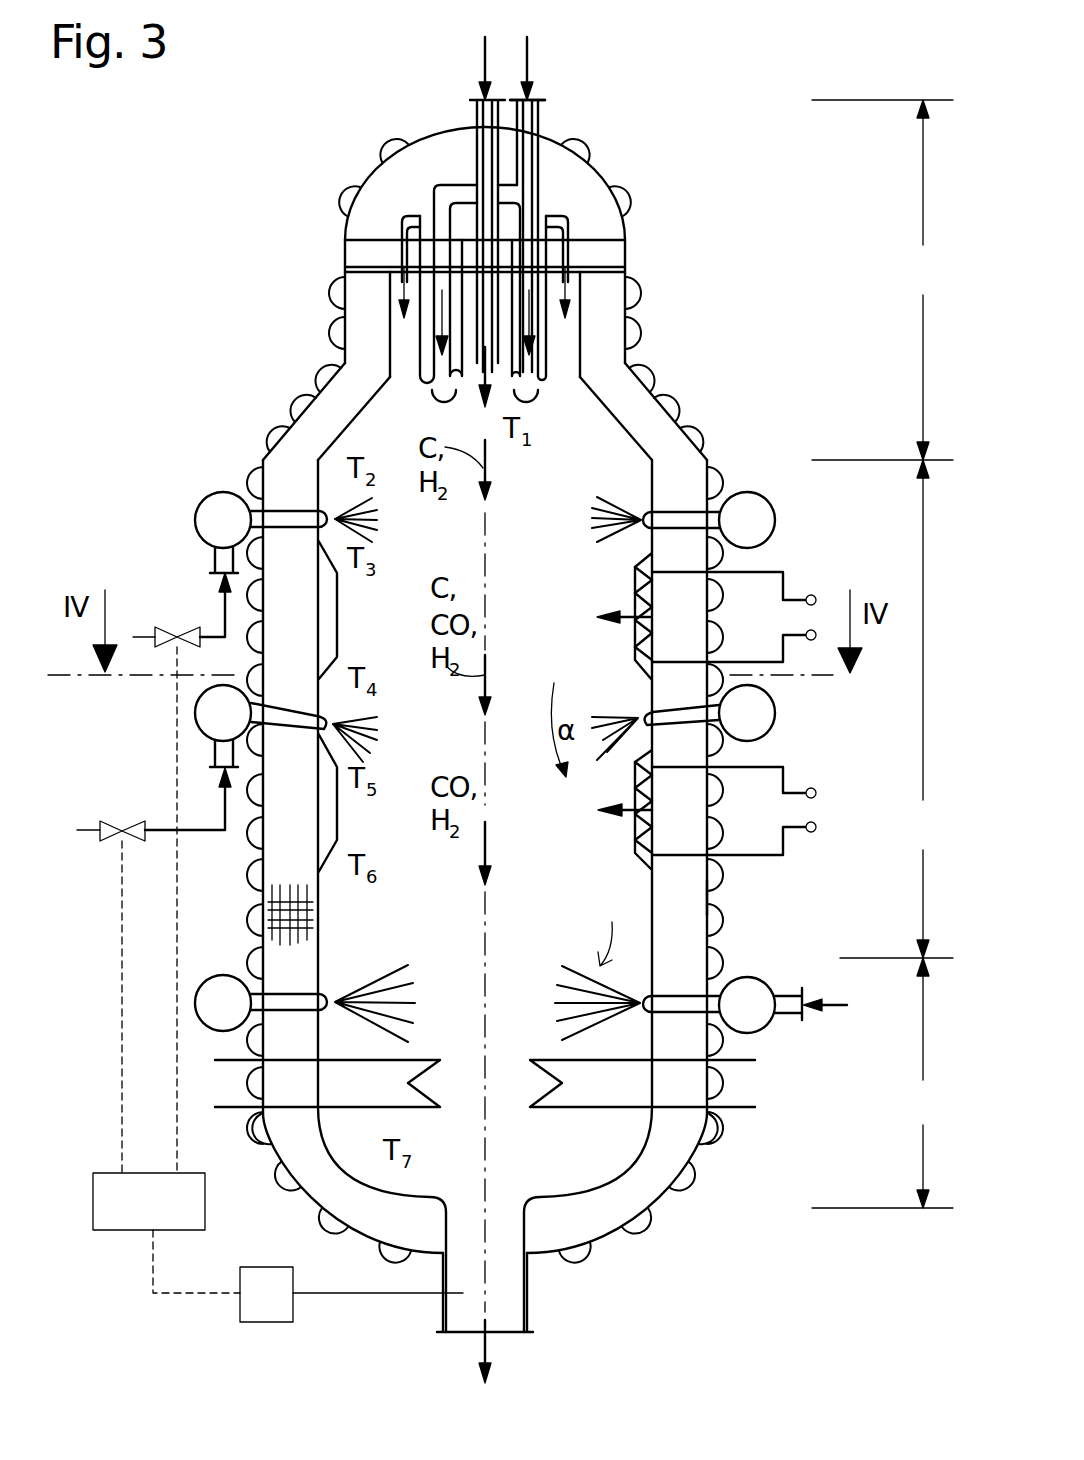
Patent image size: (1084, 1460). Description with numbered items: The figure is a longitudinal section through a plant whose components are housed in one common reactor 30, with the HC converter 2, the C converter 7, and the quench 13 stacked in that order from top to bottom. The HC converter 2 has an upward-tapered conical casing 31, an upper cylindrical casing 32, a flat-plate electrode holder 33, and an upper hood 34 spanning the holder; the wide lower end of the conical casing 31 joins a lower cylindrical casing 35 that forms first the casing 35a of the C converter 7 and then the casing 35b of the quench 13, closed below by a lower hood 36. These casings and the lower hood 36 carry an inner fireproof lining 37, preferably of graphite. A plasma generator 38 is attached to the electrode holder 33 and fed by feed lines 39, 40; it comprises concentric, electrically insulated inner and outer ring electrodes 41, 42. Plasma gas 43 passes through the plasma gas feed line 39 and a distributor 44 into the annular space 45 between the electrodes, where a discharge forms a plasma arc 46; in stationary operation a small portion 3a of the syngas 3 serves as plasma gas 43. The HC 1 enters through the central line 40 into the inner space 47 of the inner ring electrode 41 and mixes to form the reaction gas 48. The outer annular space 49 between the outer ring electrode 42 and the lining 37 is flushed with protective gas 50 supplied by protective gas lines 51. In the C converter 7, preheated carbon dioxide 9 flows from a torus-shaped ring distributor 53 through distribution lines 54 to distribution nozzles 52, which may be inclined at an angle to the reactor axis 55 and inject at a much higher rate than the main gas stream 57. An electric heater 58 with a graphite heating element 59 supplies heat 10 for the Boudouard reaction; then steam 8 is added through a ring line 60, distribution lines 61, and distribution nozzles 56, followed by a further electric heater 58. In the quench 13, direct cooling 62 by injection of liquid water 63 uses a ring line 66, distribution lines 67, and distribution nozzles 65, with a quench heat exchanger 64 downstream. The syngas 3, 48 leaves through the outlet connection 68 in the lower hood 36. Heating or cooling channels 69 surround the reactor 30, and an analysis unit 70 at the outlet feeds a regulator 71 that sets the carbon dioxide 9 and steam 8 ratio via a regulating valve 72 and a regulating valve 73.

The HC 1 is at (478, 55).
The HC converter 2 is at (882, 280).
The syngas 3 is at (491, 1343).
The portion of the syngas 3a is at (589, 62).
The C converter 7 is at (896, 709).
The steam 8 is at (207, 828).
The carbon dioxide 9 is at (222, 630).
The heat 10 is at (630, 618).
The quench 13 is at (882, 1083).
The reactor 30 is at (700, 122).
The conical casing 31 is at (318, 393).
The cylindrical casing 32 is at (346, 318).
The electrode holder 33 is at (360, 255).
The upper hood 34 is at (378, 165).
The lower cylindrical casing 35 is at (268, 900).
The casing of the C converter 35a is at (710, 757).
The casing of the quench 35b is at (707, 897).
The lower hood 36 is at (657, 1200).
The fireproof lining 37 is at (318, 922).
The plasma generator 38 is at (560, 200).
The plasma gas feed line 39 is at (540, 105).
The central line 40 is at (475, 110).
The inner ring electrode 41 is at (530, 387).
The outer ring electrode 42 is at (563, 333).
The plasma gas 43 is at (532, 62).
The distributor 44 is at (460, 180).
The annular space 45 is at (430, 388).
The plasma arc 46 is at (630, 412).
The inner space 47 is at (474, 365).
The reaction gas 48 is at (492, 400).
The outer annular space 49 is at (403, 343).
The protective gas 50 is at (403, 292).
The protective gas line 51 is at (427, 216).
The distribution nozzle 52 is at (633, 540).
The ring distributor 53 is at (198, 497).
The distribution line 54 is at (305, 512).
The reactor axis 55 is at (478, 530).
The distribution nozzle 56 is at (330, 717).
The main gas stream 57 is at (487, 673).
The electric heater 58 is at (755, 572).
The heating element 59 is at (633, 597).
The ring line 60 is at (203, 723).
The distribution line 61 is at (277, 702).
The direct cooling 62 is at (616, 928).
The liquid water 63 is at (548, 995).
The quench heat exchanger 64 is at (603, 1107).
The distribution nozzle 65 is at (328, 995).
The ring line 66 is at (755, 977).
The distribution line 67 is at (688, 990).
The outlet connection 68 is at (527, 1283).
The heating or cooling channels 69 is at (700, 428).
The analysis unit 70 is at (258, 1322).
The regulator 71 is at (123, 1232).
The regulating valve 72 is at (172, 627).
The regulating valve 73 is at (113, 822).